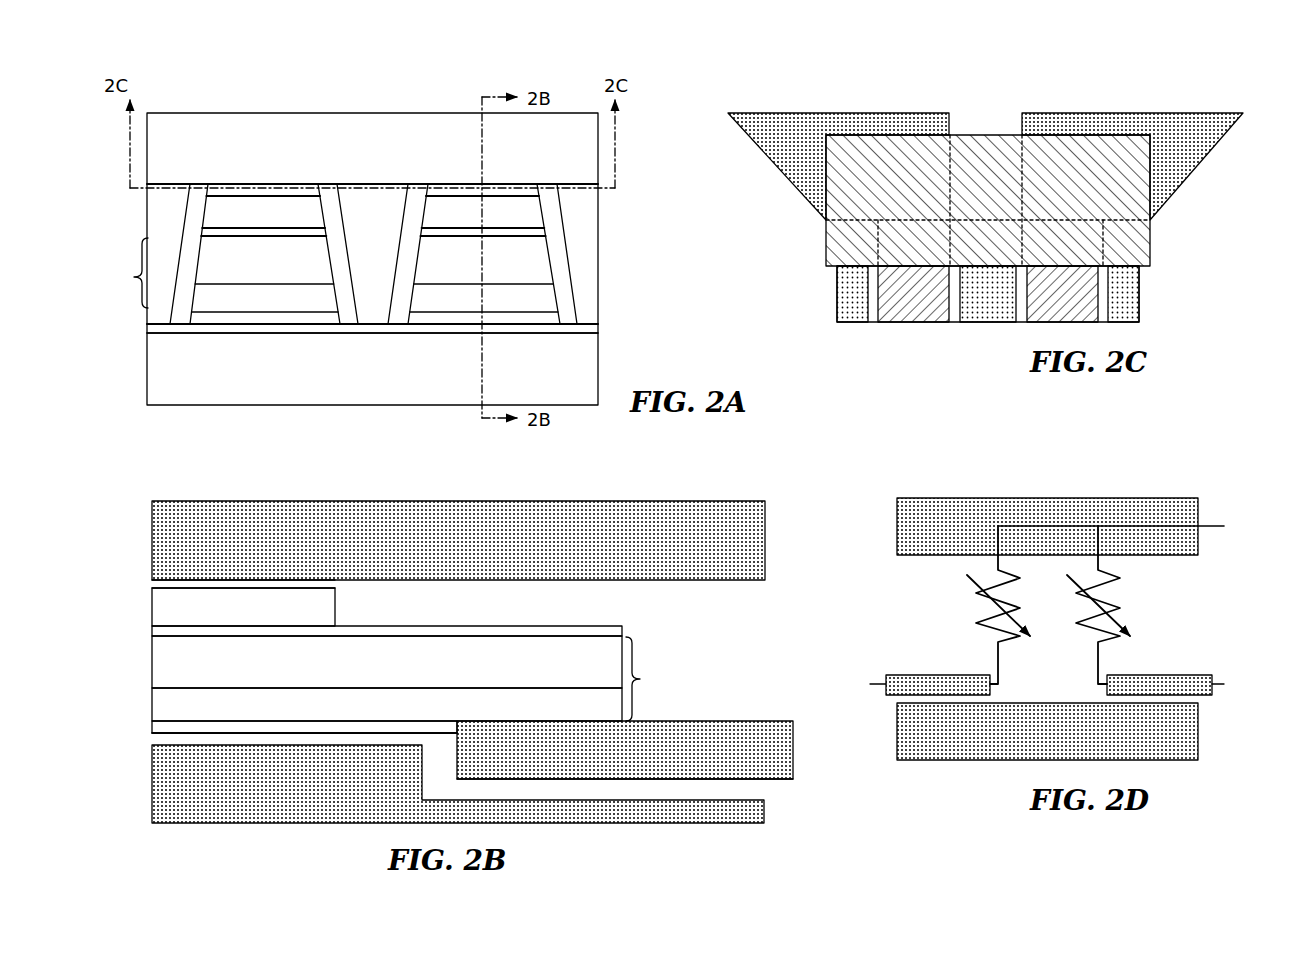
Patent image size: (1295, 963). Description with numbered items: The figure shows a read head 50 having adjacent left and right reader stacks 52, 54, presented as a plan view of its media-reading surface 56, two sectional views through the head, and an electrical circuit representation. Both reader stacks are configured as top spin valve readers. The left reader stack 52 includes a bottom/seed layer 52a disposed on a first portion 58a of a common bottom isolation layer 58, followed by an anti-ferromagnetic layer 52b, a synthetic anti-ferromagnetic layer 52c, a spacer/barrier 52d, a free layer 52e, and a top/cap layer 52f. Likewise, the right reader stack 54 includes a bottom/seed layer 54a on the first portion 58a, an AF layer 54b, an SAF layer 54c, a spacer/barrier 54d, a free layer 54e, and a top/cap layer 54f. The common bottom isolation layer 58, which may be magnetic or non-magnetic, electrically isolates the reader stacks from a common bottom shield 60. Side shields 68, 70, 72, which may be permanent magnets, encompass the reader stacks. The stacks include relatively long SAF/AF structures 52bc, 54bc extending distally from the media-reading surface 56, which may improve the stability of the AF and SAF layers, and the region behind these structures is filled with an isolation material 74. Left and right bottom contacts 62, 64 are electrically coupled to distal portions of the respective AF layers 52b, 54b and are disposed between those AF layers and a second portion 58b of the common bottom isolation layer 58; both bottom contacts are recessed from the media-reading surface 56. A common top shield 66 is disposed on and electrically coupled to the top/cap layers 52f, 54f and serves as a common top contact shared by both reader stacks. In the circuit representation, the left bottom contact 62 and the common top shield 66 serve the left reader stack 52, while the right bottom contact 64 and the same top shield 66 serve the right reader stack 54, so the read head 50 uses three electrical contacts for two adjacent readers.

In FIG. 2A, the read head 50 is at (286, 86).
In FIG. 2B, the read head 50 is at (206, 482).
In FIG. 2C, the read head 50 is at (986, 80).
In FIG. 2D, the read head 50 is at (952, 480).
In FIG. 2A, the left reader stack 52 is at (189, 244).
In FIG. 2D, the left reader stack 52 is at (958, 597).
In FIG. 2A, the bottom/seed layer 52a is at (150, 340).
In FIG. 2A, the anti-ferromagnetic layer 52b is at (280, 307).
In FIG. 2A, the SAF/AF structure 52bc is at (117, 273).
In FIG. 2A, the synthetic anti-ferromagnetic layer 52c is at (280, 272).
In FIG. 2A, the spacer/barrier 52d is at (216, 230).
In FIG. 2A, the free layer 52e is at (280, 223).
In FIG. 2A, the top/cap layer 52f is at (215, 188).
In FIG. 2C, the top/cap layer 52f is at (927, 303).
In FIG. 2A, the right reader stack 54 is at (542, 250).
In FIG. 2B, the right reader stack 54 is at (389, 657).
In FIG. 2D, the right reader stack 54 is at (1140, 596).
In FIG. 2A, the bottom/seed layer 54a is at (595, 340).
In FIG. 2B, the bottom/seed layer 54a is at (265, 713).
In FIG. 2A, the anti-ferromagnetic layer 54b is at (534, 307).
In FIG. 2B, the anti-ferromagnetic layer 54b is at (318, 713).
In FIG. 2B, the SAF/AF structure 54bc is at (665, 679).
In FIG. 2A, the synthetic anti-ferromagnetic layer 54c is at (534, 272).
In FIG. 2B, the synthetic anti-ferromagnetic layer 54c is at (318, 676).
In FIG. 2A, the spacer/barrier 54d is at (524, 232).
In FIG. 2B, the spacer/barrier 54d is at (472, 630).
In FIG. 2A, the free layer 54e is at (534, 223).
In FIG. 2B, the free layer 54e is at (246, 617).
In FIG. 2A, the top/cap layer 54f is at (530, 188).
In FIG. 2B, the top/cap layer 54f is at (322, 586).
In FIG. 2C, the top/cap layer 54f is at (1076, 303).
In FIG. 2B, the media-reading surface 56 is at (126, 550).
In FIG. 2C, the media-reading surface 56 is at (952, 346).
In FIG. 2A, the common bottom isolation layer 58 is at (587, 326).
In FIG. 2B, the common bottom isolation layer 58 is at (449, 778).
In FIG. 2B, the first portion of the common bottom isolation layer 58a is at (196, 738).
In FIG. 2B, the second portion of the common bottom isolation layer 58b is at (636, 801).
In FIG. 2D, the second portion of the common bottom isolation layer 58b is at (898, 698).
In FIG. 2A, the common bottom shield 60 is at (356, 378).
In FIG. 2B, the common bottom shield 60 is at (280, 793).
In FIG. 2D, the common bottom shield 60 is at (1058, 743).
In FIG. 2C, the left bottom contact 62 is at (877, 113).
In FIG. 2D, the left bottom contact 62 is at (906, 675).
In FIG. 2B, the right bottom contact 64 is at (616, 761).
In FIG. 2C, the right bottom contact 64 is at (1092, 113).
In FIG. 2D, the right bottom contact 64 is at (1170, 675).
In FIG. 2A, the common top shield 66 is at (323, 156).
In FIG. 2B, the common top shield 66 is at (279, 552).
In FIG. 2D, the common top shield 66 is at (950, 535).
In FIG. 2A, the side shield 68 is at (175, 223).
In FIG. 2C, the side shield 68 is at (846, 302).
In FIG. 2A, the side shield 70 is at (377, 227).
In FIG. 2C, the side shield 70 is at (997, 320).
In FIG. 2A, the side shield 72 is at (586, 217).
In FIG. 2C, the side shield 72 is at (1126, 300).
In FIG. 2B, the isolation material 74 is at (633, 617).
In FIG. 2C, the isolation material 74 is at (997, 216).